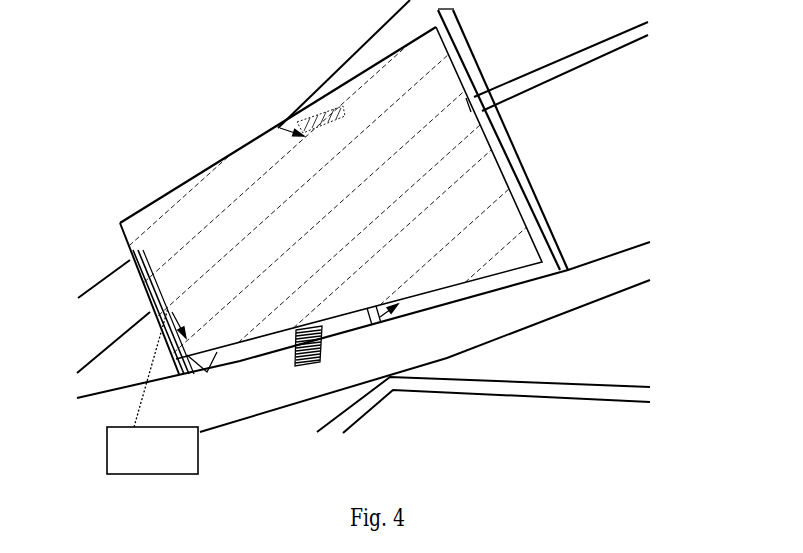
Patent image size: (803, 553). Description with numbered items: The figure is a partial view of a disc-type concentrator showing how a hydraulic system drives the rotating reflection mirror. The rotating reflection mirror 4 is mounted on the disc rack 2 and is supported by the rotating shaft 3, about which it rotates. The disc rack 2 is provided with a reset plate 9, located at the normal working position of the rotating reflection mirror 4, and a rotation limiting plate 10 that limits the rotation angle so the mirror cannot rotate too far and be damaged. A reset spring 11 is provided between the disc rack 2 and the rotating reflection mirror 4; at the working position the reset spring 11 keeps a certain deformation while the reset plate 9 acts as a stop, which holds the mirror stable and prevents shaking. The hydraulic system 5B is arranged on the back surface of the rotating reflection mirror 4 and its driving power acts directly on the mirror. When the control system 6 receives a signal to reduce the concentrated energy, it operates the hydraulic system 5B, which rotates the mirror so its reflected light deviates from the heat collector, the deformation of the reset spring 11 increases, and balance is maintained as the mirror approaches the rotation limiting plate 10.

The disc rack 2 is at (320, 82).
The rotation limiting plate 10 is at (292, 115).
The rotating reflection mirror 4 is at (245, 152).
The reset plate 9 is at (133, 264).
The rotating shaft 3 is at (530, 195).
The hydraulic system 5B is at (194, 362).
The control system 6 is at (198, 442).
The reset spring 11 is at (330, 352).